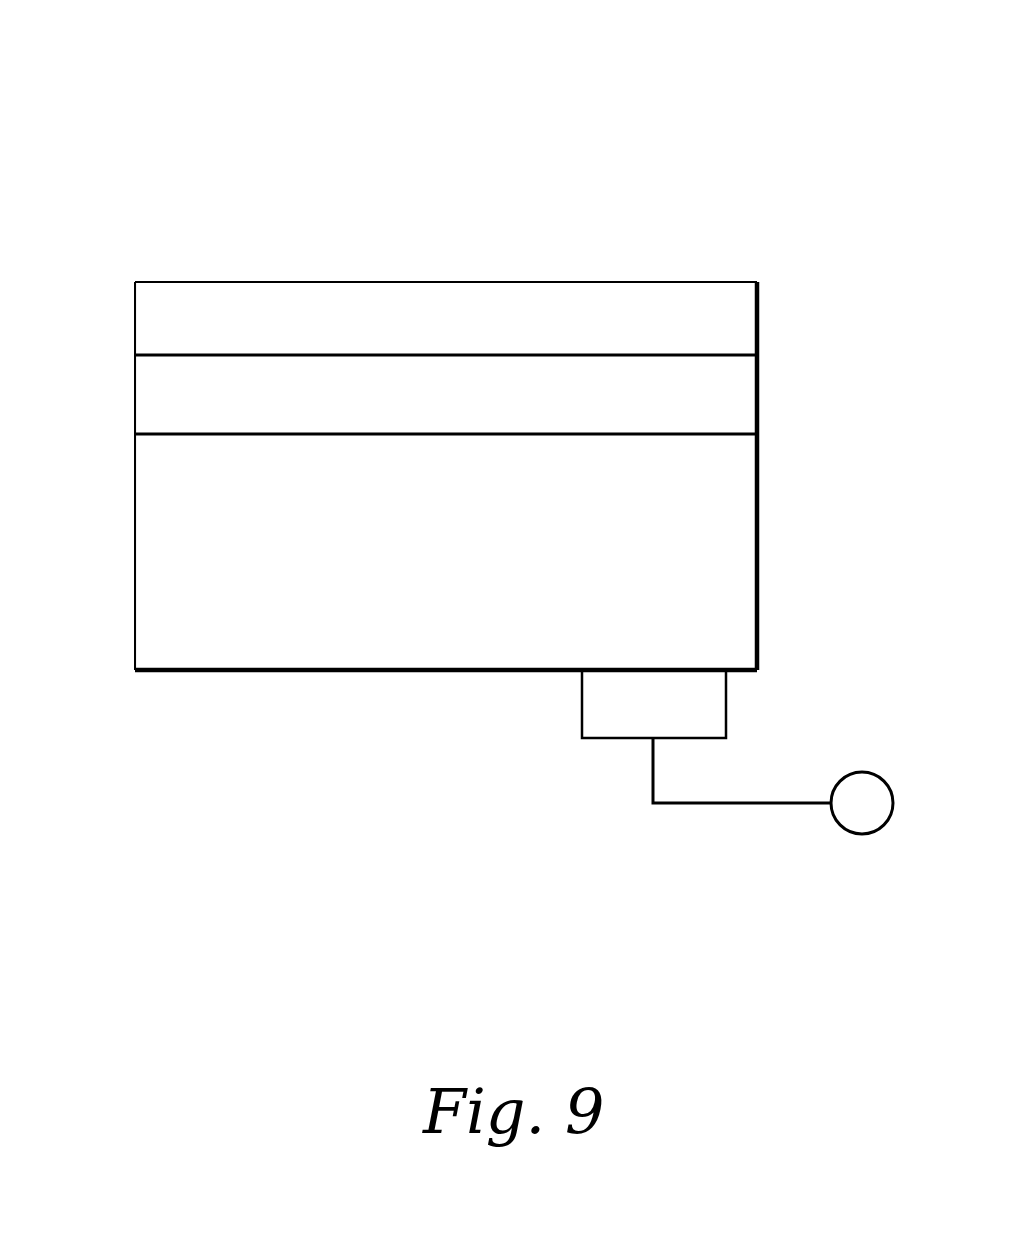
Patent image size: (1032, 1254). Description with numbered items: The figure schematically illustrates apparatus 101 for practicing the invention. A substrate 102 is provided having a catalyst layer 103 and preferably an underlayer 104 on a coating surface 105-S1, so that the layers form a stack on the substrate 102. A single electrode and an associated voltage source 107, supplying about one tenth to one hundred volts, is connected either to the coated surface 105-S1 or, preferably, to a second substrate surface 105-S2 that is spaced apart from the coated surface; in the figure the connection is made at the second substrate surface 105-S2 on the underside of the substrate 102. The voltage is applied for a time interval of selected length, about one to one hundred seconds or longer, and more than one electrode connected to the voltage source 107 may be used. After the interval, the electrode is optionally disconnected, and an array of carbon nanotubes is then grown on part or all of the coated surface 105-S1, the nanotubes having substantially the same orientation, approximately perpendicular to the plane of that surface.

The apparatus 101 is at (761, 77).
The substrate 102 is at (143, 479).
The catalyst layer 103 is at (143, 321).
The underlayer 104 is at (143, 400).
The coating surface 105-S1 is at (316, 437).
The second substrate surface 105-S2 is at (545, 667).
The voltage source 107 is at (859, 772).